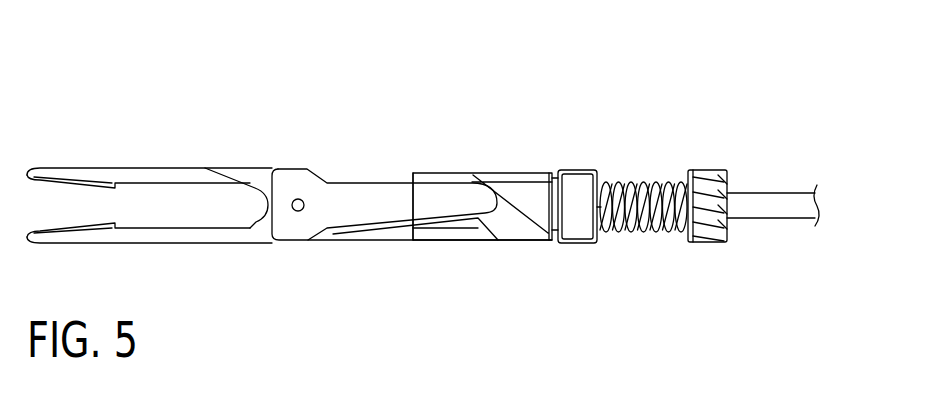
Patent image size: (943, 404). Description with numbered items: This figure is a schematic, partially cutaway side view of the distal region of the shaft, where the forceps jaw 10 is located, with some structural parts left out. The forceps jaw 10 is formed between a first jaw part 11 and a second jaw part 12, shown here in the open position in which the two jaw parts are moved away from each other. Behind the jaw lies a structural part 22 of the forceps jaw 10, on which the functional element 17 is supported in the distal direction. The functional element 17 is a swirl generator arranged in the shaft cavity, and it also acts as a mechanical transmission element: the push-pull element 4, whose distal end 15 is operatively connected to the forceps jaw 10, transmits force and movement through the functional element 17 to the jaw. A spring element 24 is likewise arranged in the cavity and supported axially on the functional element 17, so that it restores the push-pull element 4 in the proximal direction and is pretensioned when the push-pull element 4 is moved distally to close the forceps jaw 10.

The forceps jaw 10 is at (172, 118).
The first jaw part 11 is at (117, 175).
The second jaw part 12 is at (125, 240).
The structural part 22 is at (525, 190).
The spring element 24 is at (623, 143).
The functional element 17 is at (710, 146).
The distal end 15 is at (730, 205).
The push-pull element 4 is at (805, 217).